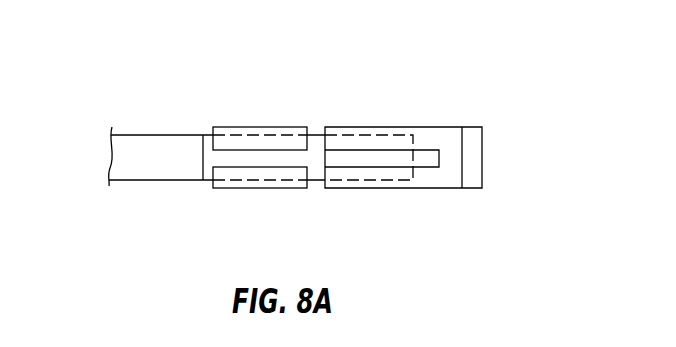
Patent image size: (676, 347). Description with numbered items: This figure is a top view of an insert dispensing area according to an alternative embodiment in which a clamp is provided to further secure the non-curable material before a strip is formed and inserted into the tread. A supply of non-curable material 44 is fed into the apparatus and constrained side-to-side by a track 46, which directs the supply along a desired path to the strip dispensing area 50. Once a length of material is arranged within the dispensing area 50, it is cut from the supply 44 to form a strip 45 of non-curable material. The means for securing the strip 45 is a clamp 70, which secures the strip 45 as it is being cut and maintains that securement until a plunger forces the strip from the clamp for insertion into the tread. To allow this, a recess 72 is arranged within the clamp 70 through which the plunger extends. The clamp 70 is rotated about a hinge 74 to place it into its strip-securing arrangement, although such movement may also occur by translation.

The supply of non-curable material 44 is at (157, 133).
The strip of non-curable material 45 is at (223, 158).
The track 46 is at (260, 189).
The strip dispensing area 50 is at (235, 86).
The clamp 70 is at (393, 189).
The recess 72 is at (381, 150).
The hinge 74 is at (483, 160).